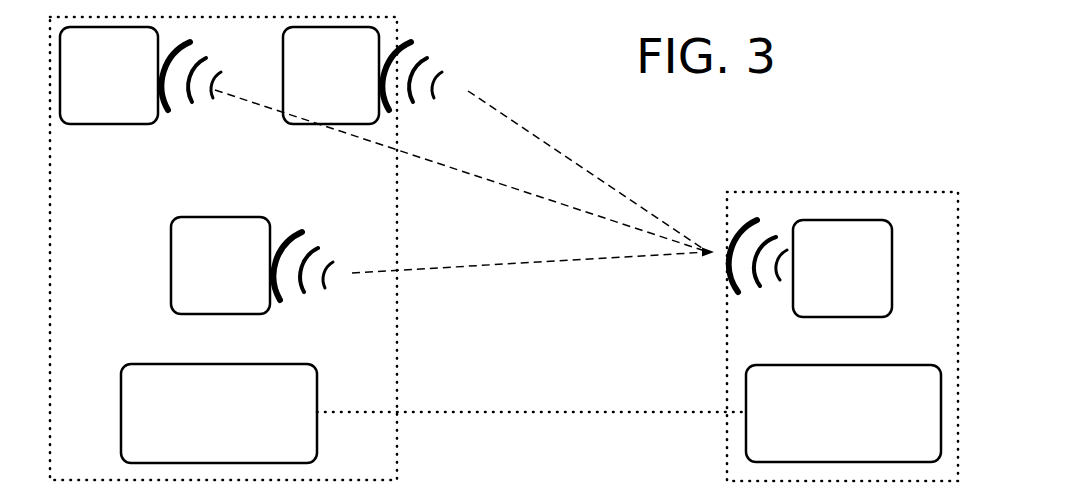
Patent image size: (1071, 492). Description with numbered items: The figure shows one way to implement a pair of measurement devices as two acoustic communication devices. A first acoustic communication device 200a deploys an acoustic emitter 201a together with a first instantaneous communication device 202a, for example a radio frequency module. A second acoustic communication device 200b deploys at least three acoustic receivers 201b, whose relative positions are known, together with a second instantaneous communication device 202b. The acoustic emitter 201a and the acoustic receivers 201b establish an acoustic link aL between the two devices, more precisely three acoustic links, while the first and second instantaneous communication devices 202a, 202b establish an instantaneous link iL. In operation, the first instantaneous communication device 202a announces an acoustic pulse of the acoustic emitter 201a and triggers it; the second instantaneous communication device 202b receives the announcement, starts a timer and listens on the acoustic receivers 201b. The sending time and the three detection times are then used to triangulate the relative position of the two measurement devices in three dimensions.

The first acoustic communication device 200a is at (727, 215).
The second acoustic communication device 200b is at (398, 255).
The acoustic emitter 201a is at (855, 220).
The acoustic receivers 201b is at (93, 124).
The first instantaneous communication device 202a is at (867, 365).
The second instantaneous communication device 202b is at (228, 364).
The acoustic link aL is at (542, 260).
The instantaneous link iL is at (493, 412).